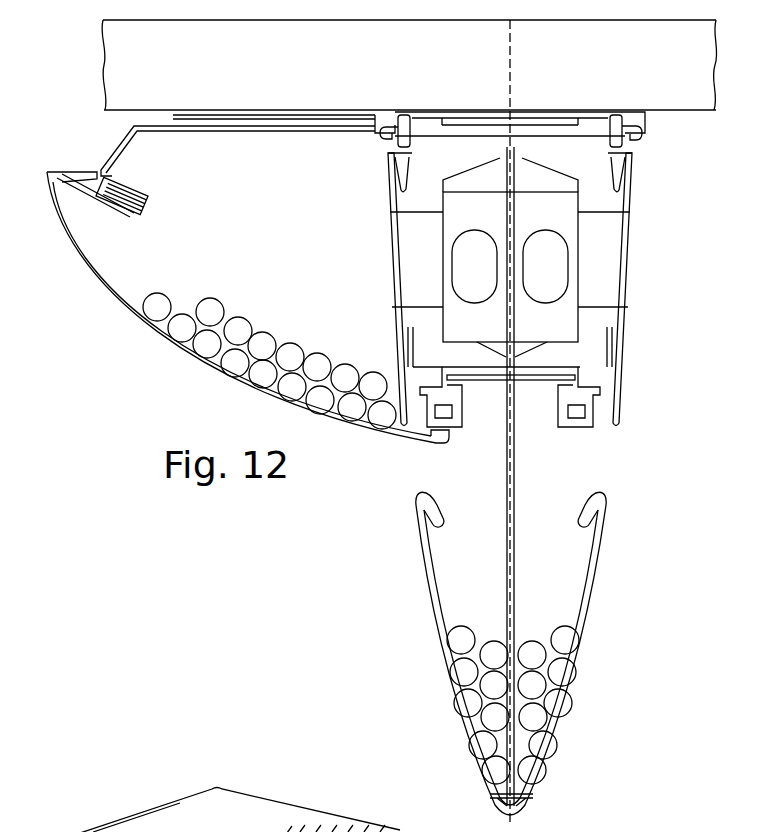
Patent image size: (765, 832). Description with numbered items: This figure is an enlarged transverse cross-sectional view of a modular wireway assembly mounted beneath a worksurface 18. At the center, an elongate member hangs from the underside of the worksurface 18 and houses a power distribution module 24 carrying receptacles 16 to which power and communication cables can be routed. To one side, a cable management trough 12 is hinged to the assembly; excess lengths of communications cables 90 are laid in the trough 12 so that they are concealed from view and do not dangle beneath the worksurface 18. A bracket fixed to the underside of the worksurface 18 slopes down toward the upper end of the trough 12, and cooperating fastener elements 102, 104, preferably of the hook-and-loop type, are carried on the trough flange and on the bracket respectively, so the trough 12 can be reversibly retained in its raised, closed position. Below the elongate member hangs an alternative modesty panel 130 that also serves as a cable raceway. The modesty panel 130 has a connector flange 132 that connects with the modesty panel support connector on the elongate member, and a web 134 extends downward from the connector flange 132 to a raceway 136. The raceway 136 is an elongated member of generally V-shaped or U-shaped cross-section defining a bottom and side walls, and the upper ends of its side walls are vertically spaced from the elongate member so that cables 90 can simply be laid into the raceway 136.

The cable management trough 12 is at (133, 318).
The receptacle 16 is at (407, 257).
The worksurface 18 is at (432, 31).
The power distribution module 24 is at (565, 332).
The communications cables 90 is at (263, 377).
The fastener element 102 is at (133, 208).
The fastener element 104 is at (143, 198).
The modesty panel 130 is at (411, 594).
The connector flange 132 is at (541, 380).
The web 134 is at (513, 455).
The raceway 136 is at (568, 597).